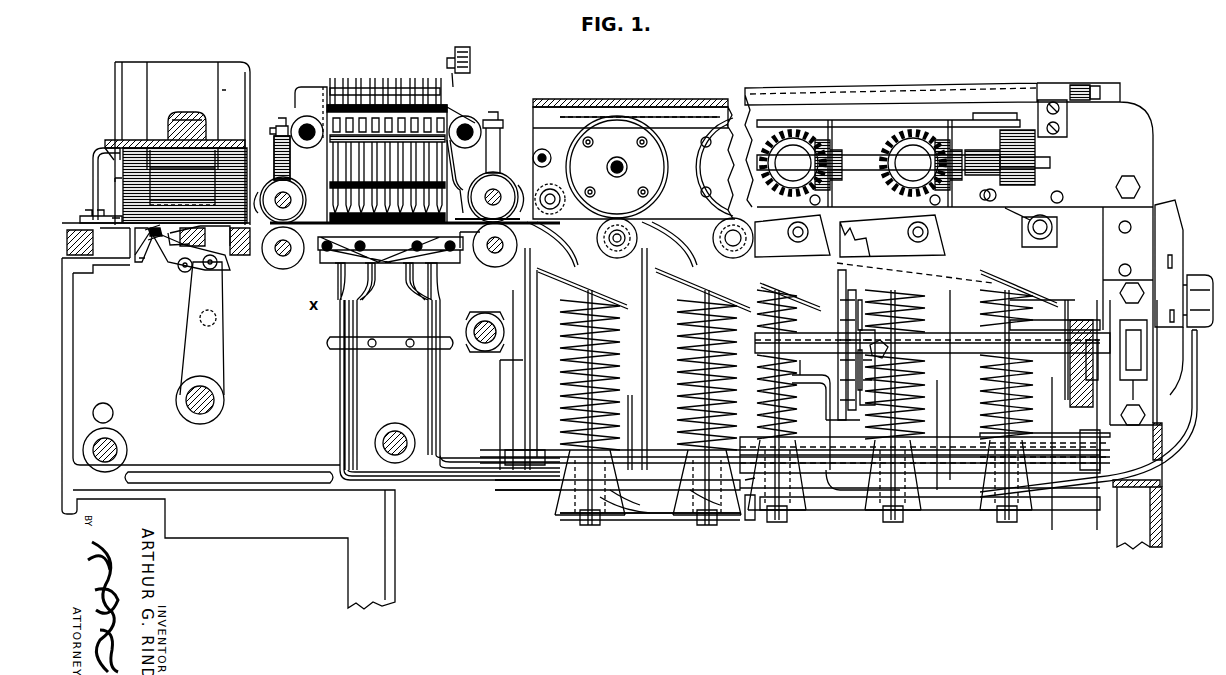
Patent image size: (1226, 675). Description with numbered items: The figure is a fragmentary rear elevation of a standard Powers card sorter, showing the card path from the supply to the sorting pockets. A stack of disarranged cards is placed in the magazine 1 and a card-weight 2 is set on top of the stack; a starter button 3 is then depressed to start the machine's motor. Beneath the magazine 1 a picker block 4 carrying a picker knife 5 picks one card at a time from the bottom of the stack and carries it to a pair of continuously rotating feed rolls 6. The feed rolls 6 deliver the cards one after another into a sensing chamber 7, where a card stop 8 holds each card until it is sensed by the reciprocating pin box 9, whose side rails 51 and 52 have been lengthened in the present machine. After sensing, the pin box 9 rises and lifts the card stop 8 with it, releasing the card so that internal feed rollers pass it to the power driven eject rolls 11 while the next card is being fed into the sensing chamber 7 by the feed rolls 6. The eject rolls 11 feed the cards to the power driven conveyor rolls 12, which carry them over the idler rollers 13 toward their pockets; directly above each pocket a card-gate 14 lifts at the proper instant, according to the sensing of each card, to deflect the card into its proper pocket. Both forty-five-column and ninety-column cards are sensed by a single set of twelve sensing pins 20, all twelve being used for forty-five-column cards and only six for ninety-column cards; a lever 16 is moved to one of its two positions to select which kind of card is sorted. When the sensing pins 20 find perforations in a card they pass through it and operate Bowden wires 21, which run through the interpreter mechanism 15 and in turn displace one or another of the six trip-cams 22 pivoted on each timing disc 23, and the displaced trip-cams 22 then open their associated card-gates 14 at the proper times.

The magazine 1 is at (185, 70).
The card-weight 2 is at (176, 114).
The starter button 3 is at (108, 176).
The picker block 4 is at (168, 250).
The picker knife 5 is at (138, 262).
The feed rolls 6 is at (270, 246).
The sensing chamber 7 is at (318, 237).
The card stop 8 is at (460, 185).
The pin box 9 is at (303, 128).
The eject rolls 11 is at (488, 262).
The conveyor rolls 12 is at (608, 133).
The idler rollers 13 is at (618, 255).
The card-gate 14 is at (590, 255).
The interpreter mechanism 15 is at (1190, 350).
The lever 16 is at (1215, 305).
The sensing pins 20 is at (430, 157).
The Bowden wires 21 is at (418, 372).
The trip-cams 22 is at (838, 305).
The timing disc 23 is at (858, 408).
The side rail 51 is at (298, 120).
The side rail 52 is at (478, 118).